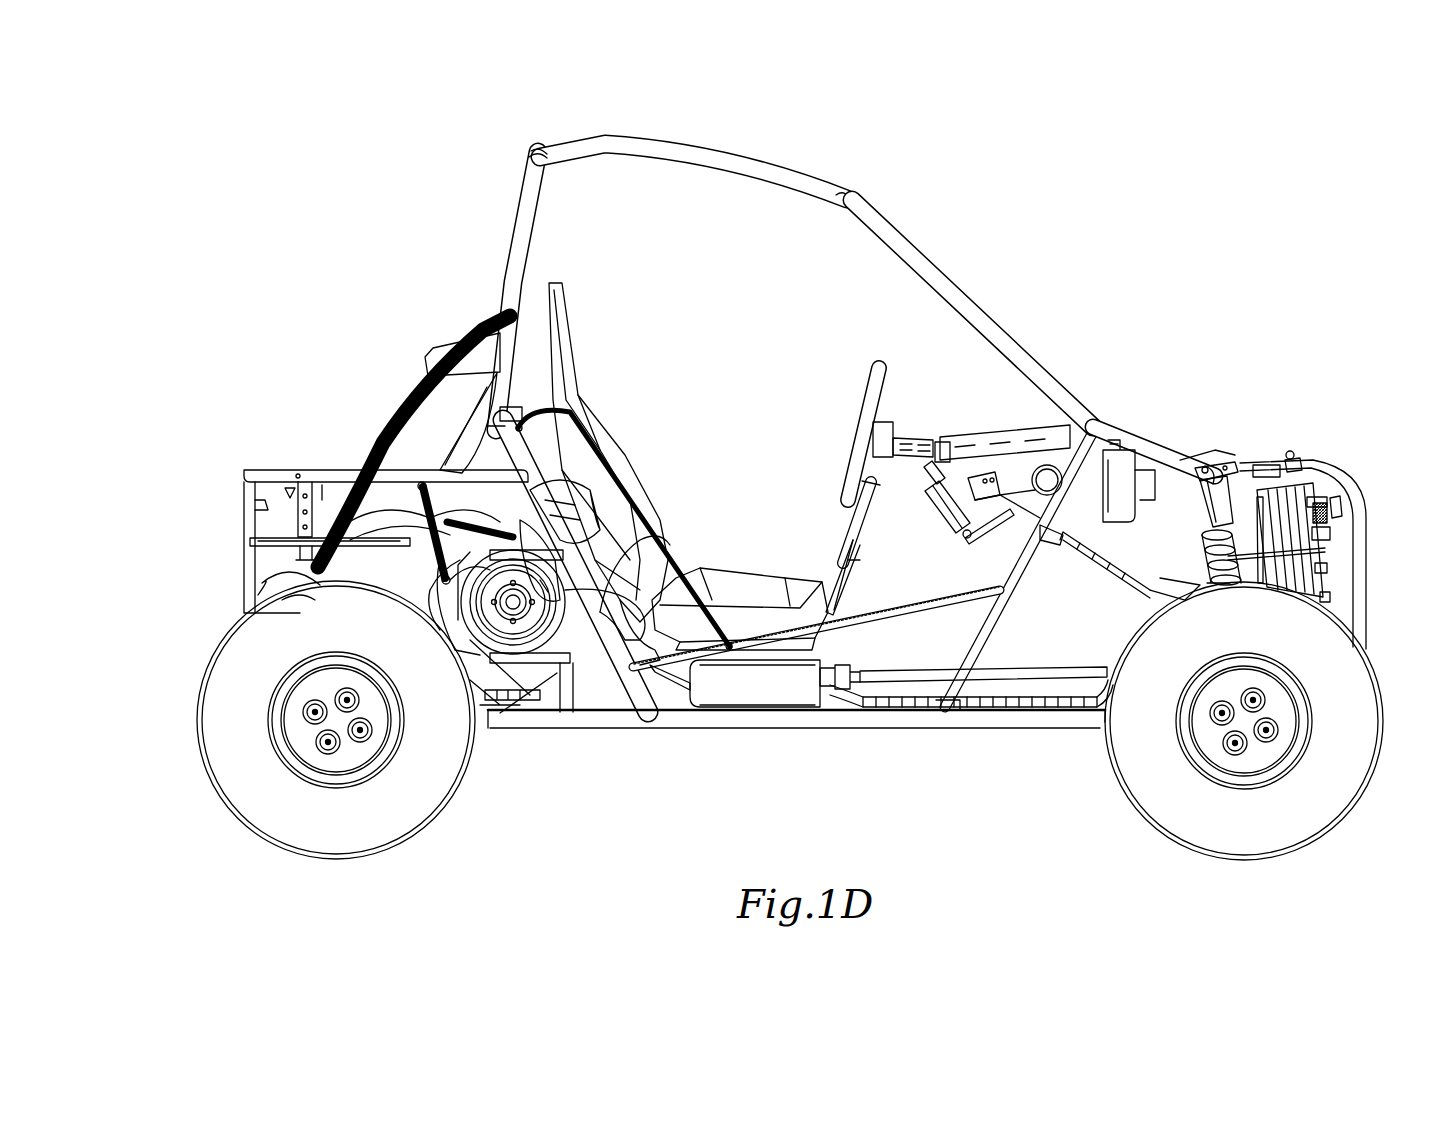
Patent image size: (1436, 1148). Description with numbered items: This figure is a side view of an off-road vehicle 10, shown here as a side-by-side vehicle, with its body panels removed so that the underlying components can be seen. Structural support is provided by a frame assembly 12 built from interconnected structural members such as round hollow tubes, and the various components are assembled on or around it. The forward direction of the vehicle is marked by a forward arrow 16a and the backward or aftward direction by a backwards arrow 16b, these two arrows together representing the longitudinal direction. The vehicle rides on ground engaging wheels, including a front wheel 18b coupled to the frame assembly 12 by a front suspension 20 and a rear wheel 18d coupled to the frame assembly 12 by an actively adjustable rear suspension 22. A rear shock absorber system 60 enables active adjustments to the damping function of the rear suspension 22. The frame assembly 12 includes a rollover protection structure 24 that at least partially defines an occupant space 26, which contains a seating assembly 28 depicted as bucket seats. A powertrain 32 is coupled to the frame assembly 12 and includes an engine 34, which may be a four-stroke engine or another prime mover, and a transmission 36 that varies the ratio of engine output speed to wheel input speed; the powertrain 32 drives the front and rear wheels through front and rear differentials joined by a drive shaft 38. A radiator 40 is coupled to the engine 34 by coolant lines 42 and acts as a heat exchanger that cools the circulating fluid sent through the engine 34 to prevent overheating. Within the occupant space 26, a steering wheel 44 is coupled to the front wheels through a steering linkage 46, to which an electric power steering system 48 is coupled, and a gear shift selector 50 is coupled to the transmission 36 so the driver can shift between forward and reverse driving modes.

The off-road vehicle 10 is at (1160, 300).
The frame assembly 12 is at (633, 676).
The forward arrow 16a is at (1007, 137).
The backwards arrow 16b is at (898, 137).
The front wheel 18b is at (1283, 832).
The rear wheel 18d is at (410, 835).
The front suspension 20 is at (1222, 495).
The actively adjustable rear suspension 22 is at (295, 571).
The rollover protection structure 24 is at (920, 262).
The occupant space 26 is at (724, 534).
The seating assembly 28 is at (578, 323).
The powertrain 32 is at (397, 520).
The engine 34 is at (527, 618).
The transmission 36 is at (420, 543).
The drive shaft 38 is at (1017, 672).
The radiator 40 is at (1302, 500).
The coolant lines 42 is at (1057, 681).
The steering wheel 44 is at (870, 395).
The steering linkage 46 is at (1103, 557).
The electric power steering system 48 is at (1045, 470).
The gear shift selector 50 is at (868, 497).
The rear shock absorber system 60 is at (436, 345).